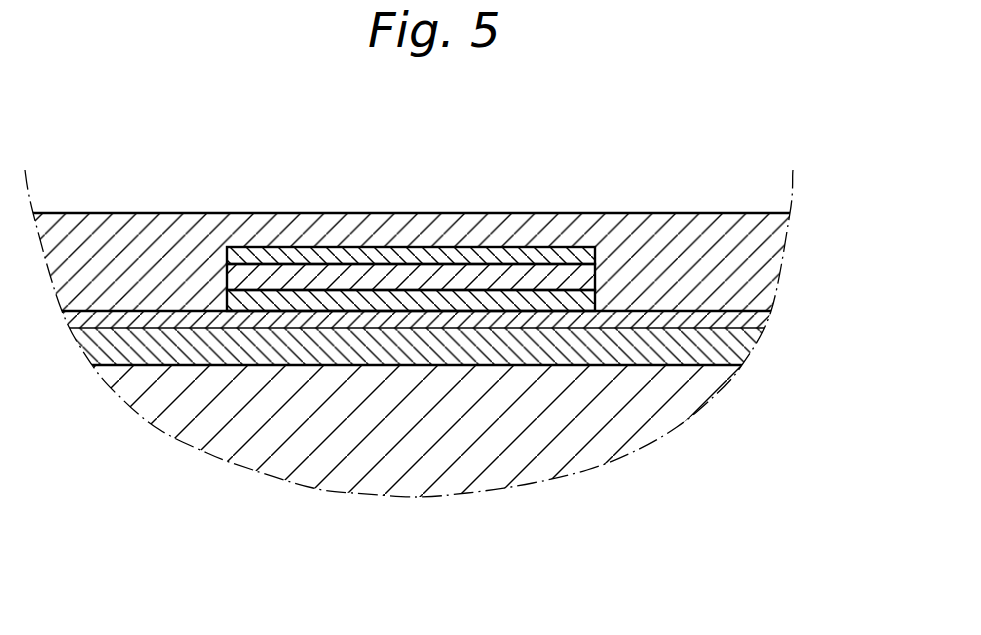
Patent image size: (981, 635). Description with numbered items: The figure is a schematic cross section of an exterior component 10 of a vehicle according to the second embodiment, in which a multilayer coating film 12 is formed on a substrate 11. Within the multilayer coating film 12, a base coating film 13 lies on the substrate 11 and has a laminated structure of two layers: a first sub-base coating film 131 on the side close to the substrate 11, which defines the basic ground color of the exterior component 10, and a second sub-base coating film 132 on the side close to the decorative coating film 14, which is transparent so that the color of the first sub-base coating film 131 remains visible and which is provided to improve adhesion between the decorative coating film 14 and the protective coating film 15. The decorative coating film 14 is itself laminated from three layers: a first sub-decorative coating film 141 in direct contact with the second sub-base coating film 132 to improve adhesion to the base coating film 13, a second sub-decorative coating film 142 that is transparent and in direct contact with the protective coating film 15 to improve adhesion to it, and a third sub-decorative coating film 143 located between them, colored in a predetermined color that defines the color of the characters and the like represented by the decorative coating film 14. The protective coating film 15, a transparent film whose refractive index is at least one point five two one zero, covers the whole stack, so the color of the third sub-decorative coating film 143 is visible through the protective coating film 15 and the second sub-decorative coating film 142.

The exterior component 10 is at (733, 140).
The substrate 11 is at (568, 415).
The multilayer coating film 12 is at (790, 214).
The base coating film 13 is at (180, 124).
The first sub-base coating film 131 is at (160, 345).
The second sub-base coating film 132 is at (215, 318).
The decorative coating film 14 is at (573, 100).
The first sub-decorative coating film 141 is at (543, 301).
The second sub-decorative coating film 142 is at (462, 258).
The third sub-decorative coating film 143 is at (498, 278).
The protective coating film 15 is at (374, 232).